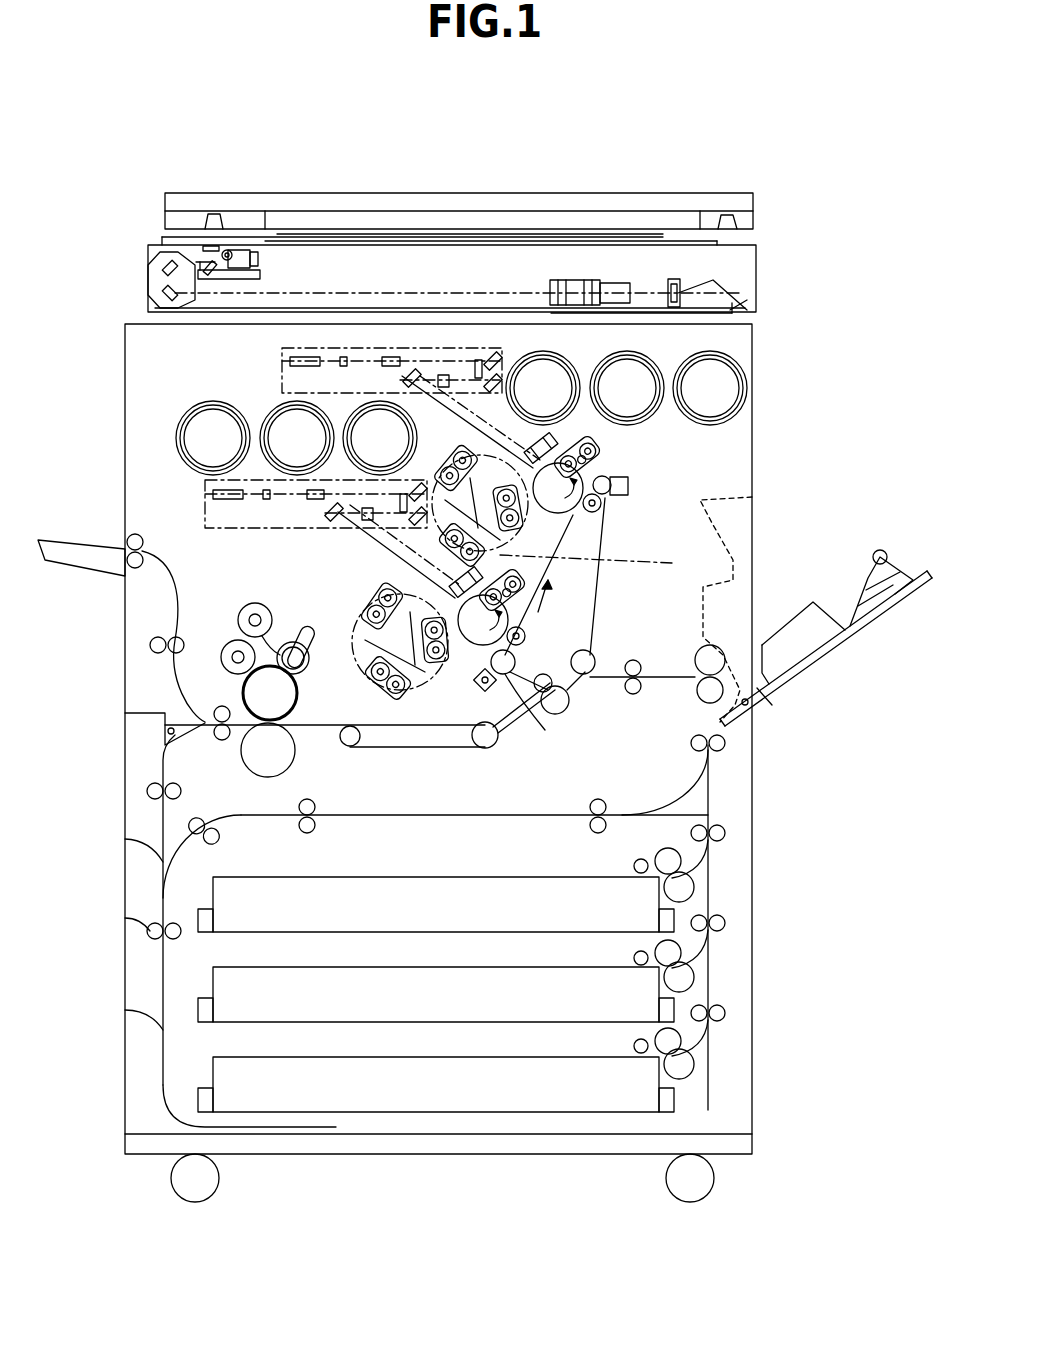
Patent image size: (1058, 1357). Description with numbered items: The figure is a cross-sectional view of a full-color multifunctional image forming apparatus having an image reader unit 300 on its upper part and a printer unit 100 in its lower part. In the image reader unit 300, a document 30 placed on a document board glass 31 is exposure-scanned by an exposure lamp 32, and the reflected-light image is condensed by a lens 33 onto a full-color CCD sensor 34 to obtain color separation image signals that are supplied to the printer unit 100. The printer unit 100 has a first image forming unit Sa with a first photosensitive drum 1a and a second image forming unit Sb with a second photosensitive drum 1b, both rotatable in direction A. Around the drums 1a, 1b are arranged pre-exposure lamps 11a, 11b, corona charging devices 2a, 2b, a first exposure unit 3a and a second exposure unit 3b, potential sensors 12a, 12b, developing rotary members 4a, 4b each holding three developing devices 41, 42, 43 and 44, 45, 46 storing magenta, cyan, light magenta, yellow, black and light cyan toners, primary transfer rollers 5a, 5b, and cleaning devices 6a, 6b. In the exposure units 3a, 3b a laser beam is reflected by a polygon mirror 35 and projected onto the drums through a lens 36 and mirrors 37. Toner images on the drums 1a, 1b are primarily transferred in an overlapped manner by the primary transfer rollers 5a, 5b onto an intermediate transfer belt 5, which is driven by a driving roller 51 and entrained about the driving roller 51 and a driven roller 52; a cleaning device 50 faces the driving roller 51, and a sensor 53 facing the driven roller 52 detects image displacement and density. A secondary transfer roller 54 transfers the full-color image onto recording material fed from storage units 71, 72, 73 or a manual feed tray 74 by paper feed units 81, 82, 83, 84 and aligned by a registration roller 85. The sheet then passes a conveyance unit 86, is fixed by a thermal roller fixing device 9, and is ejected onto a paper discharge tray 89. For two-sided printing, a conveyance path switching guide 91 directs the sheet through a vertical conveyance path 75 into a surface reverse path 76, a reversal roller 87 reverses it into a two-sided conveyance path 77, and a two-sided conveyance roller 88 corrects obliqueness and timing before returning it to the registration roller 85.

The printer unit 100 is at (777, 738).
The image reader unit 300 is at (773, 207).
The document 30 is at (637, 236).
The document board glass 31 is at (690, 240).
The exposure lamp 32 is at (228, 252).
The lens 33 is at (600, 292).
The full-color charge-coupled device (CCD) sensor 34 is at (737, 283).
The first exposure unit 3a is at (205, 515).
The second exposure unit 3b is at (282, 372).
The polygon mirror 35 is at (292, 358).
The lens 36 is at (382, 368).
The mirrors 37 is at (505, 364).
The potential sensor 12a is at (372, 586).
The potential sensor 12b is at (482, 432).
The corona charging device 2a is at (378, 585).
The corona charging device 2b is at (530, 455).
The developing device 45 is at (465, 465).
The first photosensitive drum 1a is at (470, 645).
The second photosensitive drum 1b is at (585, 512).
The pre-exposure lamp 11a is at (478, 577).
The pre-exposure lamp 11b is at (562, 450).
The cleaning device 6a is at (525, 614).
The cleaning device 6b is at (588, 464).
The driven roller 52 is at (610, 480).
The sensor 53 is at (630, 486).
The primary transfer roller 5a is at (526, 636).
The primary transfer roller 5b is at (604, 503).
The intermediate transfer belt 5 is at (600, 515).
The secondary transfer roller 54 is at (565, 712).
The moving member (developing rotary member) 4a is at (325, 630).
The moving member (developing rotary member) 4b is at (626, 609).
The developing device 44 is at (555, 530).
The developing device 46 is at (545, 580).
The developing device 41 is at (432, 688).
The developing device 43 is at (365, 688).
The developing device 42 is at (352, 605).
The first image forming unit Sa is at (347, 662).
The second image forming unit Sb is at (297, 562).
The thermal roller fixing device 9 is at (260, 693).
The conveyance unit 86 is at (395, 746).
The conveyance path switching guide 91 is at (163, 718).
The paper discharge tray 89 is at (78, 542).
The cleaning device 50 is at (500, 692).
The driving roller 51 is at (530, 705).
The registration roller 85 is at (636, 696).
The paper feed unit 84 is at (700, 660).
The manual feed tray 74 is at (792, 628).
The two-sided conveyance path 77 is at (390, 818).
The two-sided conveyance roller 88 is at (598, 830).
The vertical conveyance path 75 is at (125, 839).
The reversal roller 87 is at (125, 918).
The surface reverse path 76 is at (125, 1010).
The storage unit 71 is at (470, 877).
The storage unit 72 is at (470, 967).
The storage unit 73 is at (470, 1057).
The paper feed unit 81 is at (690, 887).
The paper feed unit 82 is at (690, 977).
The paper feed unit 83 is at (690, 1064).